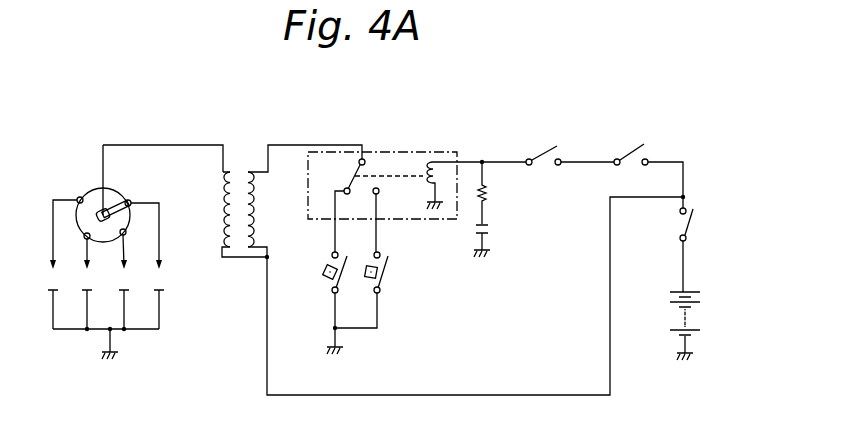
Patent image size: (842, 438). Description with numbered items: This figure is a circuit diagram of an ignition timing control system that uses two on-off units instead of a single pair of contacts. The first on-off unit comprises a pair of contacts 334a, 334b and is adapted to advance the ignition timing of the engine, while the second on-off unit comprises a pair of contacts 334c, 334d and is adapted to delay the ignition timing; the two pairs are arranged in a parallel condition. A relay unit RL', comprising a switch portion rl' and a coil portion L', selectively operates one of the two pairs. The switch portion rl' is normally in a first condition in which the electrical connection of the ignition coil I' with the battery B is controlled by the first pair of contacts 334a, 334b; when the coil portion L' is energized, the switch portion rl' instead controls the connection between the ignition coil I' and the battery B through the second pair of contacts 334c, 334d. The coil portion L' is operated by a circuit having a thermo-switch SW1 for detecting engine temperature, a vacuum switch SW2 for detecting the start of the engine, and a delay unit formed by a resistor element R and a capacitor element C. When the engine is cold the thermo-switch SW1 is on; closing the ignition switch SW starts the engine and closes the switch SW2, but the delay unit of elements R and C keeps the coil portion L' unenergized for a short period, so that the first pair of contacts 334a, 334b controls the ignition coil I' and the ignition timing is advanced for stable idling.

The ignition coil I' is at (232, 180).
The relay unit RL' is at (382, 161).
The switch portion rl' is at (368, 205).
The coil portion L' is at (454, 156).
The contact 334a is at (331, 255).
The contact 334b is at (331, 291).
The contact 334c is at (383, 251).
The contact 334d is at (380, 291).
The resistor element R is at (490, 196).
The capacitor element C is at (490, 232).
The thermo-switch SW1 is at (546, 150).
The vacuum switch SW2 is at (632, 150).
The ignition switch SW is at (673, 227).
The battery B is at (667, 303).